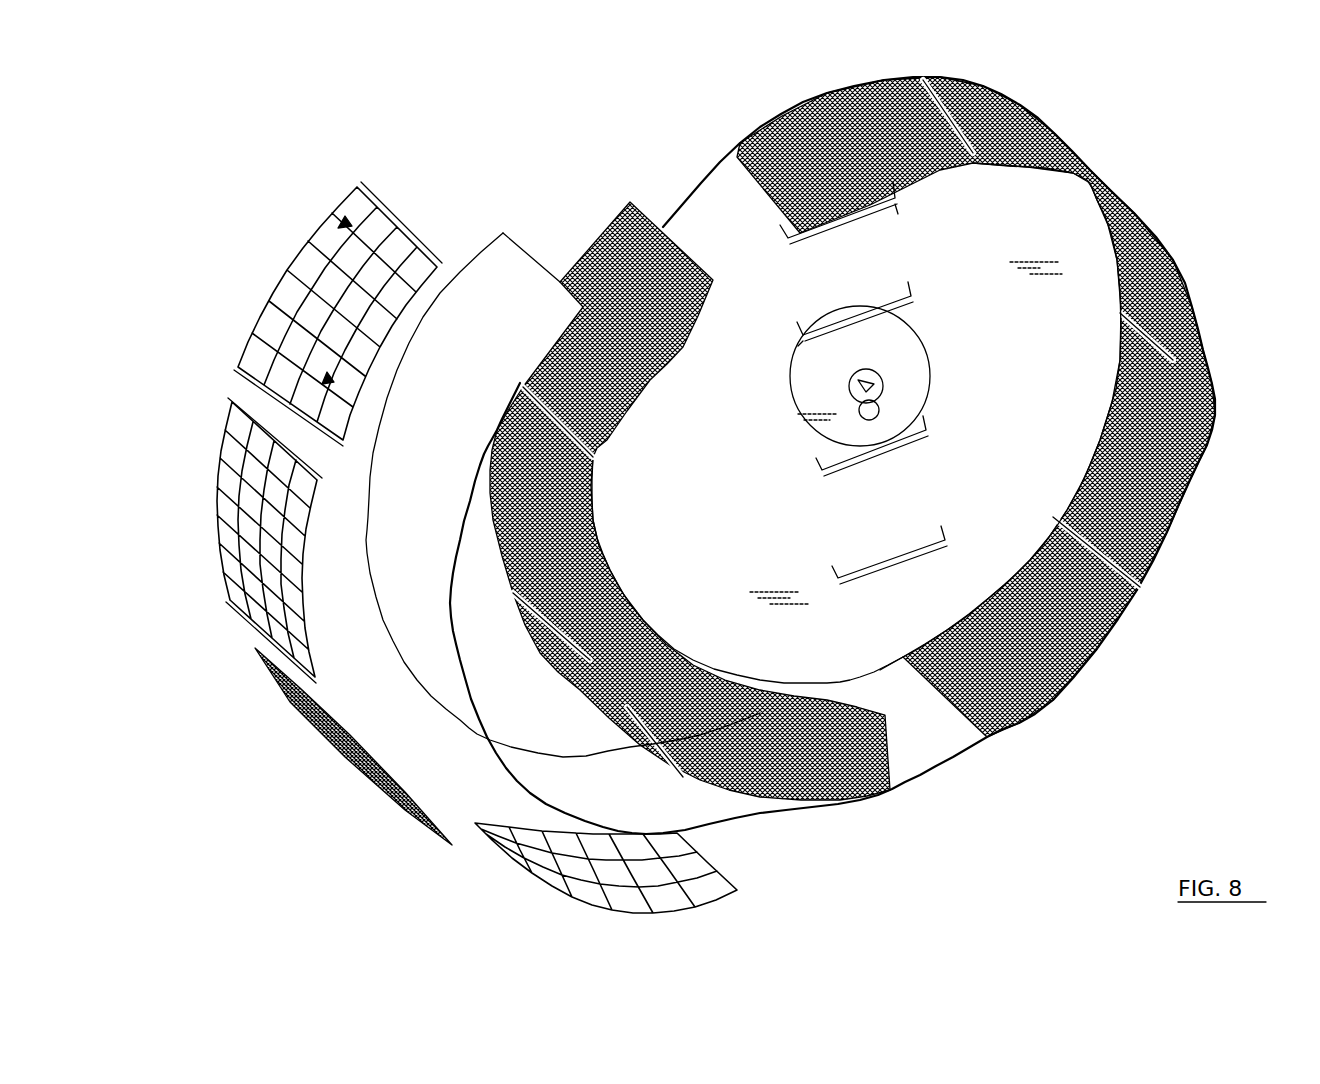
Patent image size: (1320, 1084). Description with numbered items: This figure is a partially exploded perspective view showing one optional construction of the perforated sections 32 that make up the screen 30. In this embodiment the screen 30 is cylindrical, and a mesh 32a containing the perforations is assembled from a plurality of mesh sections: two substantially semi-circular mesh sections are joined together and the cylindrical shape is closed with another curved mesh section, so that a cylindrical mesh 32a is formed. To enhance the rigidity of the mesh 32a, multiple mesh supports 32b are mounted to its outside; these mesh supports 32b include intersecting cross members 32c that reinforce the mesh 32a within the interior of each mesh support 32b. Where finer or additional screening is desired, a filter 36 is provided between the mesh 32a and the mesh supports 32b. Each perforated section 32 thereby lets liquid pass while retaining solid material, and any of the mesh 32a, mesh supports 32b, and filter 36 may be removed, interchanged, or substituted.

The screen 30 is at (832, 440).
The perforated section 32 is at (435, 537).
The mesh 32a is at (598, 236).
The mesh support 32b is at (274, 288).
The cross member 32c is at (338, 214).
The filter 36 is at (478, 292).